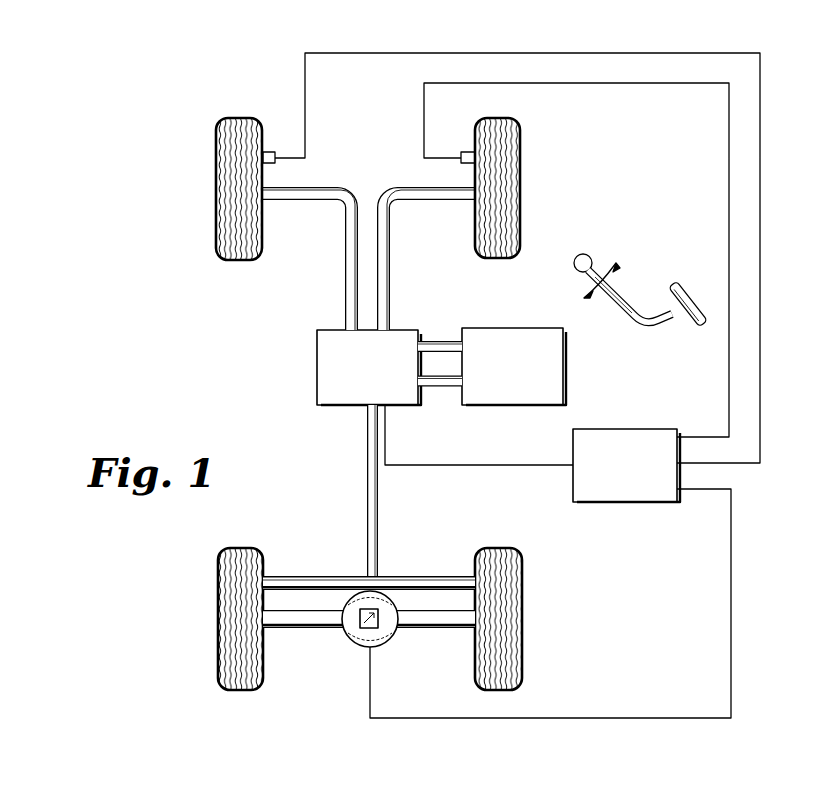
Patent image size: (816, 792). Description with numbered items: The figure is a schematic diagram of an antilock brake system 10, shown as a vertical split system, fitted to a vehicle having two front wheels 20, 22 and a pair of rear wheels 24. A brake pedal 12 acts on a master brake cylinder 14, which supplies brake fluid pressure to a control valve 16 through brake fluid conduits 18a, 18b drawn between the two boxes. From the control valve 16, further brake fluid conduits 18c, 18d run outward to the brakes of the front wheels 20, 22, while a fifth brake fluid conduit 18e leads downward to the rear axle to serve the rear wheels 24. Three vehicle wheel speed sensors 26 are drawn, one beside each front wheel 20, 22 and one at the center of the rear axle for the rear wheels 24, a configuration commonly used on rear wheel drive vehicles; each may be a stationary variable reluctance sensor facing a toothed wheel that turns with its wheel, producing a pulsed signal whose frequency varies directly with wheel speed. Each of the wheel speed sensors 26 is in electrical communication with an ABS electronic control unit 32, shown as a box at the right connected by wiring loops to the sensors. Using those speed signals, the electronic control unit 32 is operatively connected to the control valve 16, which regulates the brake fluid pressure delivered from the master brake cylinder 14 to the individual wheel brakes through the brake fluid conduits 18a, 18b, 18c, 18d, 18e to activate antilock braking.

The antilock brake system 10 is at (200, 88).
The brake pedal 12 is at (640, 276).
The master brake cylinder 14 is at (530, 405).
The control valve 16 is at (317, 357).
The brake fluid conduit 18a is at (440, 341).
The brake fluid conduit 18b is at (440, 390).
The brake fluid conduit 18c is at (390, 293).
The brake fluid conduit 18d is at (345, 293).
The brake fluid conduit 18e is at (367, 448).
The front wheel 20 is at (520, 165).
The front wheel 22 is at (216, 193).
The rear wheels 24 is at (218, 603).
The vehicle wheel speed sensors 26 is at (268, 152).
The ABS electronic control unit 32 is at (635, 502).